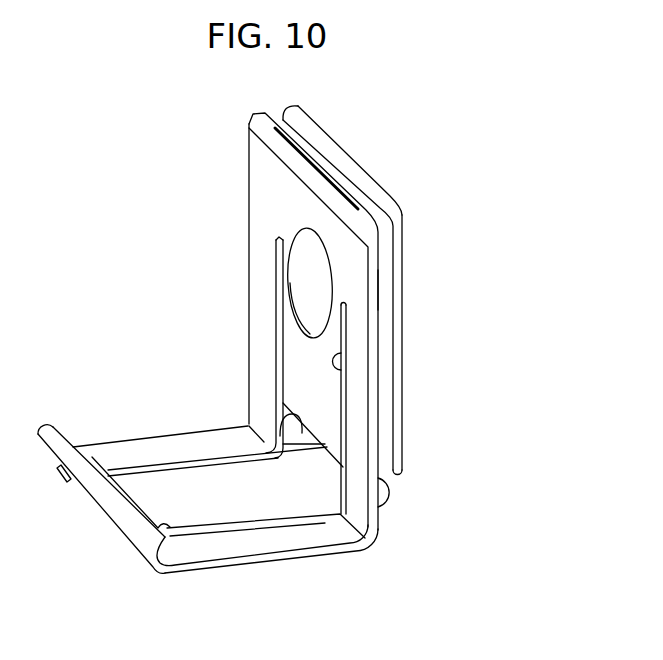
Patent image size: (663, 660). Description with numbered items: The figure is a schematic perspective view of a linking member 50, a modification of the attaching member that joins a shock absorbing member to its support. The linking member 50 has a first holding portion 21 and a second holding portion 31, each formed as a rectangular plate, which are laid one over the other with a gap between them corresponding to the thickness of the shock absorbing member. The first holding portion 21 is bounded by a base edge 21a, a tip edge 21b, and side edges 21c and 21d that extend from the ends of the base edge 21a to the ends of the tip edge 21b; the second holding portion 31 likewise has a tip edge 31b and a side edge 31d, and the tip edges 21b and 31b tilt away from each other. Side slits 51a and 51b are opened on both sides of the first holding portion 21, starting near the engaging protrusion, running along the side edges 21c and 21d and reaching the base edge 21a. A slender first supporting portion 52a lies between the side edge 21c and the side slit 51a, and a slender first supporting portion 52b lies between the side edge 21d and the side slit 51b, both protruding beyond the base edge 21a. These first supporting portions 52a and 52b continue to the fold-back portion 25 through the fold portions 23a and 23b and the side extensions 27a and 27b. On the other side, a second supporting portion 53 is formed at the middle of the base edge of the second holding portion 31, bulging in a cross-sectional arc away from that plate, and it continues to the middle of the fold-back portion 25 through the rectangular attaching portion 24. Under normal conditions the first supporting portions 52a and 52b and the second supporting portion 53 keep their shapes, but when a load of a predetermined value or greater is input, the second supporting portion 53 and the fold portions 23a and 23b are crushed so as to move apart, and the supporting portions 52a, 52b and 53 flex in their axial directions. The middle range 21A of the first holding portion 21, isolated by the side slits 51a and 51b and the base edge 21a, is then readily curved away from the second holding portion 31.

The linking member 50 is at (462, 118).
The first holding portion 21 is at (261, 207).
The base edge 21a is at (272, 396).
The middle range 21A is at (325, 407).
The tip edge 21b is at (320, 167).
The side edge 21c is at (249, 158).
The side edge 21d is at (378, 292).
The fold portion 23a is at (243, 437).
The fold portion 23b is at (343, 518).
The rectangular attaching portion 24 is at (177, 505).
The fold-back portion 25 is at (130, 524).
The side extension 27a is at (121, 452).
The side extension 27b is at (200, 550).
The second holding portion 31 is at (365, 188).
The tip edge 31b is at (318, 122).
The side edge 31d is at (403, 265).
The side slit 51a is at (290, 285).
The side slit 51b is at (334, 367).
The first supporting portion 52a is at (272, 323).
The first supporting portion 52b is at (355, 452).
The second supporting portion 53 is at (397, 500).